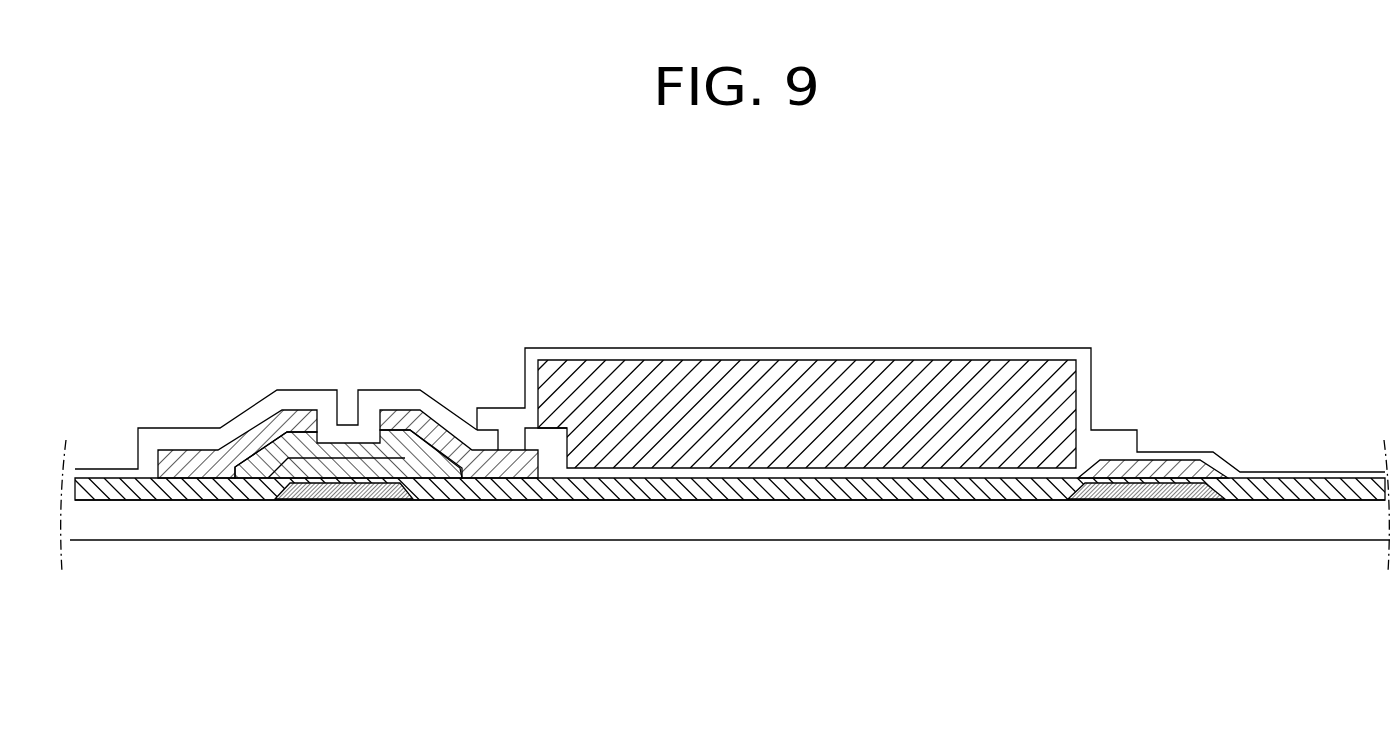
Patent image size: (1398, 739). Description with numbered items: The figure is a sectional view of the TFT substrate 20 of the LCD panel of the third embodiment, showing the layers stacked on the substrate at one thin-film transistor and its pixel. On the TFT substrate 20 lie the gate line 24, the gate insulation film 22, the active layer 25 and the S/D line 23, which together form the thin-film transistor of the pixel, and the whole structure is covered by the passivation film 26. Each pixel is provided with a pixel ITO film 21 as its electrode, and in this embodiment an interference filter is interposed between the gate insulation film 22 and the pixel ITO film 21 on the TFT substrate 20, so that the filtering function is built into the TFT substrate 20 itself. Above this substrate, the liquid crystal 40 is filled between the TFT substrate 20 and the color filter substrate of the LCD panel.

The TFT substrate 20 is at (1256, 540).
The pixel ITO film 21 is at (988, 346).
The gate insulation film 22 is at (165, 492).
The S/D line 23 is at (512, 497).
The gate line 24 is at (358, 500).
The active layer 25 is at (272, 500).
The passivation film 26 is at (311, 397).
The liquid crystal 40 is at (830, 460).